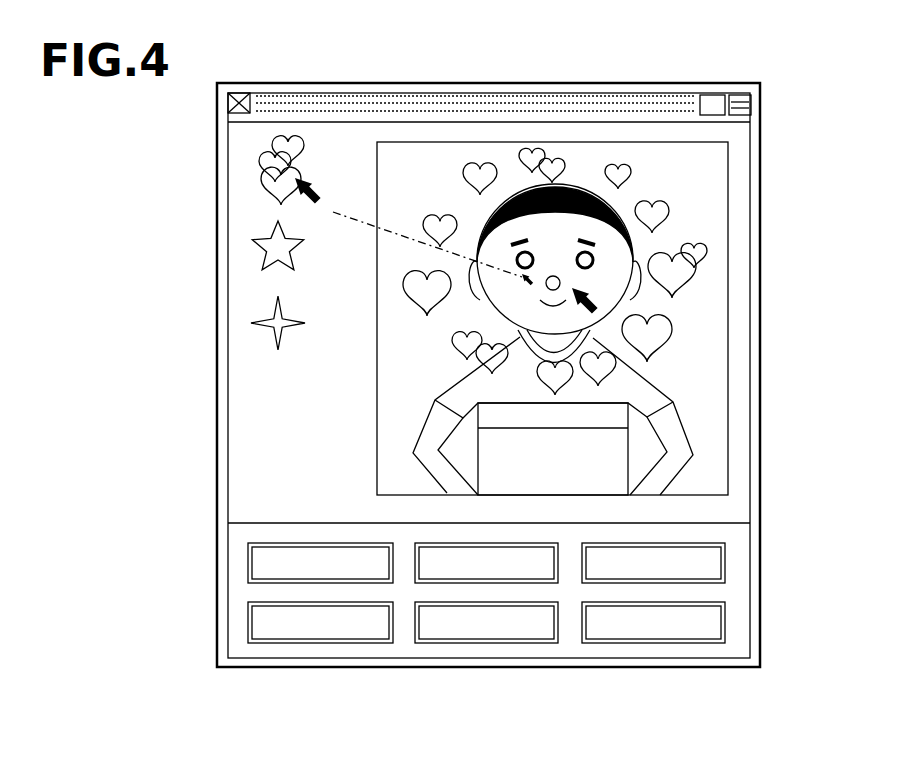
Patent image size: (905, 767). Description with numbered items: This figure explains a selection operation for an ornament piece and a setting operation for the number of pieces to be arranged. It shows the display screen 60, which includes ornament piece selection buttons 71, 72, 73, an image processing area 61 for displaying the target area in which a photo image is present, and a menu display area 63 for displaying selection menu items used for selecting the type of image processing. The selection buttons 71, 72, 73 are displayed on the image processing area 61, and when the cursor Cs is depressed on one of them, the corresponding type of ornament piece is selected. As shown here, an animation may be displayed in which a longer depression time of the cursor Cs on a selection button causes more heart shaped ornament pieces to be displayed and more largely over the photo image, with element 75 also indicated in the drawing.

The display screen 60 is at (643, 83).
The image processing area 61 is at (729, 326).
The menu display area 63 is at (740, 593).
The selection button 71 is at (258, 165).
The selection button 72 is at (252, 255).
The selection button 73 is at (268, 330).
The decorated image 75 is at (375, 490).
The cursor Cs is at (597, 297).